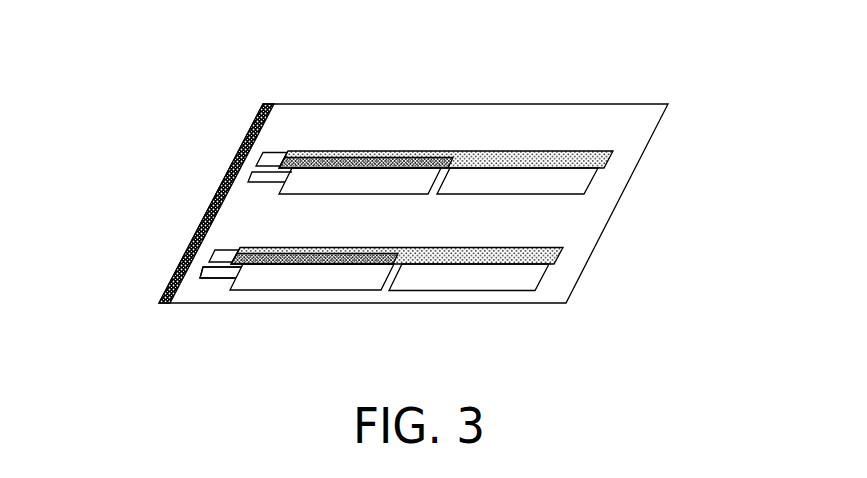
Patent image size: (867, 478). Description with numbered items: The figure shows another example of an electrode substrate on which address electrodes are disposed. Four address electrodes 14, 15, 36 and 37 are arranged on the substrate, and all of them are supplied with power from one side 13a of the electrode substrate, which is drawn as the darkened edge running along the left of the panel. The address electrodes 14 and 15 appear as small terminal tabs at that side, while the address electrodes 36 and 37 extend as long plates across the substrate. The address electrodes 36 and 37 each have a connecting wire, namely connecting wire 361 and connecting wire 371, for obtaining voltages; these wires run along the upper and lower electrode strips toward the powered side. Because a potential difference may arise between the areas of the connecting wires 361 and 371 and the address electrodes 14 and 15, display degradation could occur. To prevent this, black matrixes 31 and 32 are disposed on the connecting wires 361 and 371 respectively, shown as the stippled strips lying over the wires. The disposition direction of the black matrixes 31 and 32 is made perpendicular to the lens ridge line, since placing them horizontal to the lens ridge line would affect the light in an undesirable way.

The one side of the electrode substrate 13a is at (178, 258).
The address electrode 14 is at (258, 172).
The address electrode 15 is at (215, 252).
The black matrix 31 is at (327, 150).
The connecting wire 361 is at (447, 147).
The address electrode 36 is at (582, 179).
The black matrix 32 is at (563, 250).
The connecting wire 371 is at (395, 238).
The address electrode 37 is at (532, 279).